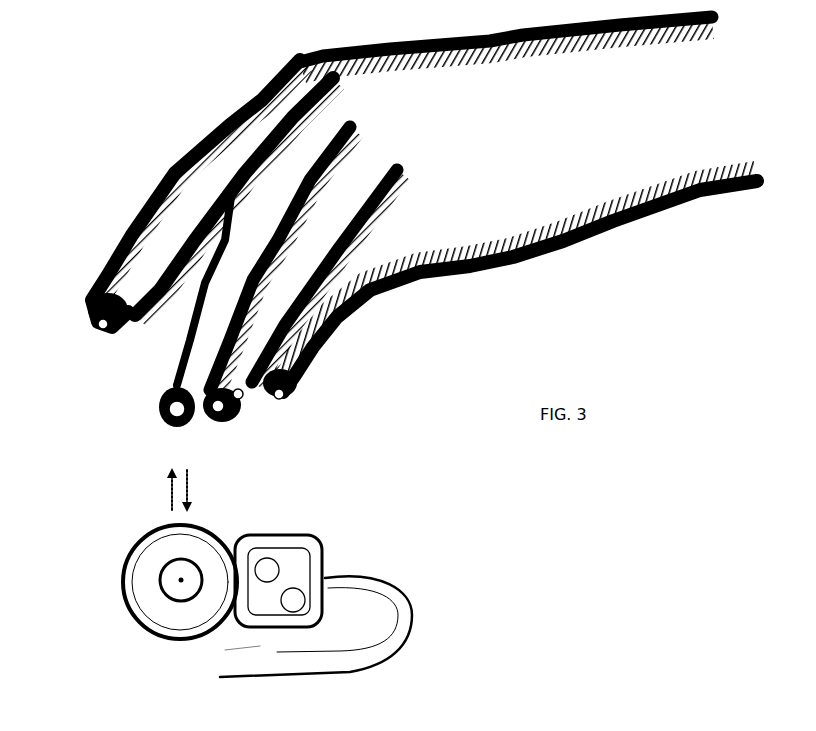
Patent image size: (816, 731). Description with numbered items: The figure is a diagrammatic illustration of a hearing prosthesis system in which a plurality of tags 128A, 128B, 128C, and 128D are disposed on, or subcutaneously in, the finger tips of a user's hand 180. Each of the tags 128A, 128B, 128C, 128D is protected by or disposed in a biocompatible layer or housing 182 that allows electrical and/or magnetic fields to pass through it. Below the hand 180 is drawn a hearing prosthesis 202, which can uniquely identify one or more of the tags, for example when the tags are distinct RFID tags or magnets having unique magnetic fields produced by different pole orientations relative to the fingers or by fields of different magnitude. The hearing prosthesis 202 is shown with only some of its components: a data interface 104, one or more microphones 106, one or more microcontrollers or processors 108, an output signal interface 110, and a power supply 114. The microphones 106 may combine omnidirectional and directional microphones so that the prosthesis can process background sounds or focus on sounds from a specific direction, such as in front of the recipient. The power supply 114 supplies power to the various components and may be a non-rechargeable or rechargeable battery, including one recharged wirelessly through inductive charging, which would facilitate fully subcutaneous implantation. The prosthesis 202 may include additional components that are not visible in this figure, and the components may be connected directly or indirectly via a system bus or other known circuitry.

The user's hand 180 is at (508, 272).
The tag 128A is at (103, 335).
The tag 128B is at (165, 432).
The tag 128C is at (240, 424).
The tag 128D is at (280, 416).
The biocompatible layer or housing 182 is at (100, 326).
The data interface 104 is at (144, 548).
The hearing prosthesis 202 is at (310, 533).
The power supply 114 is at (268, 559).
The microphone 106 is at (306, 604).
The output signal interface 110 is at (407, 600).
The microcontroller or processor 108 is at (253, 617).